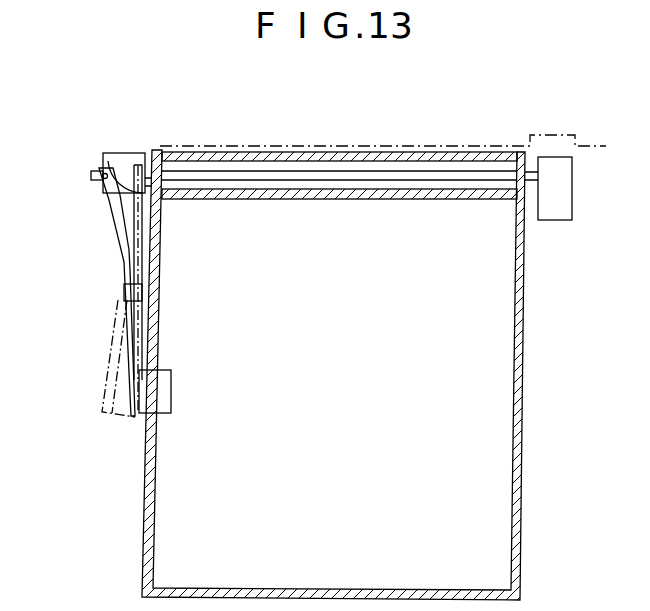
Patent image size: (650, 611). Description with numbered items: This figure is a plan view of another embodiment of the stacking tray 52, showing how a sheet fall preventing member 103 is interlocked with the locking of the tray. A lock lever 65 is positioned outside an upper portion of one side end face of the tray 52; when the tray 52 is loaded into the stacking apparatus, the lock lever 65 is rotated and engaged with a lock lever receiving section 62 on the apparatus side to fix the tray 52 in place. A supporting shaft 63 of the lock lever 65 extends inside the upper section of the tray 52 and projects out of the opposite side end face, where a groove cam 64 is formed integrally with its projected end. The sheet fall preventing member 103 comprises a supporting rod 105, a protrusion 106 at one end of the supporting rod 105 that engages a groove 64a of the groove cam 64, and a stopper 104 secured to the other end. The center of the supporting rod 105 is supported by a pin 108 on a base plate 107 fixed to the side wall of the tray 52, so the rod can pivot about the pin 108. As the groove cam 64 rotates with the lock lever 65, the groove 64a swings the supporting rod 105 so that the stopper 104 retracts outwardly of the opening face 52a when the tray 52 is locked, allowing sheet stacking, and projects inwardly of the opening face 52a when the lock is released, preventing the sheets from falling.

The tray 52 is at (527, 345).
The opening face 52a is at (488, 432).
The lock lever receiving section 62 is at (568, 136).
The supporting shaft 63 is at (432, 177).
The groove cam 64 is at (128, 167).
The groove 64a is at (121, 186).
The lock lever 65 is at (563, 206).
The sheet fall preventing member 103 is at (134, 257).
The stopper 104 is at (158, 397).
The supporting rod 105 is at (136, 323).
The protrusion 106 is at (105, 163).
The base plate 107 is at (131, 279).
The pin 108 is at (125, 292).